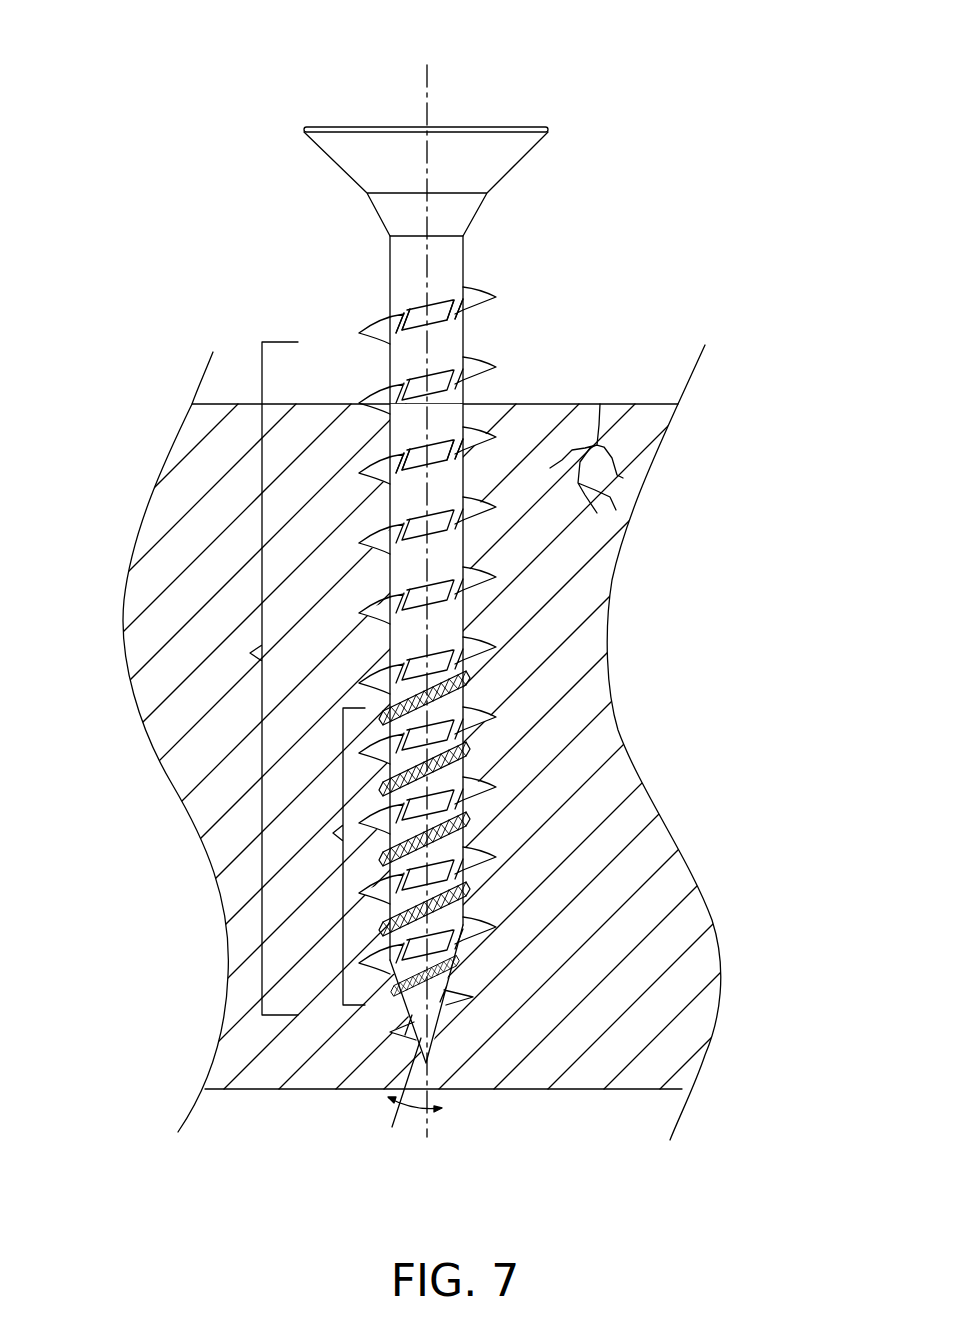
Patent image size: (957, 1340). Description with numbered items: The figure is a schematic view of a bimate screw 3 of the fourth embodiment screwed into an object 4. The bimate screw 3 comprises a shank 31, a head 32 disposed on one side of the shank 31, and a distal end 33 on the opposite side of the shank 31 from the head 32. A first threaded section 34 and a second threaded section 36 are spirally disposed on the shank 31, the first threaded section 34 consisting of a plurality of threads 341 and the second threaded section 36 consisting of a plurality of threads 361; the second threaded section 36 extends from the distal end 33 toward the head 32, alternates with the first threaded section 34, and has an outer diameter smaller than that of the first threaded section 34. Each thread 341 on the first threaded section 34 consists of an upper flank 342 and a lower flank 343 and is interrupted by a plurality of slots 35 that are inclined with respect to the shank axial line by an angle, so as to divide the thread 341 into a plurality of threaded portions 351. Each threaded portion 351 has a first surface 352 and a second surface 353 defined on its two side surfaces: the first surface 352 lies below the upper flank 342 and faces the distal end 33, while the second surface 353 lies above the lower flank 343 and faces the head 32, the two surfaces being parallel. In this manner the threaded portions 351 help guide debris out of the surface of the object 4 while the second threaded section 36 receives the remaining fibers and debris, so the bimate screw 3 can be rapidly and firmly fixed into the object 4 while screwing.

The bimate screw 3 is at (376, 590).
The object 4 is at (622, 404).
The shank 31 is at (457, 252).
The head 32 is at (493, 132).
The distal end 33 is at (420, 1043).
The first threaded section 34 is at (459, 702).
The thread 341 is at (480, 297).
The upper flank 342 is at (393, 313).
The lower flank 343 is at (440, 323).
The slot 35 is at (461, 578).
The threaded portion 351 is at (472, 628).
The first surface 352 is at (406, 453).
The second surface 353 is at (455, 440).
The second threaded section 36 is at (498, 838).
The thread 361 is at (470, 752).